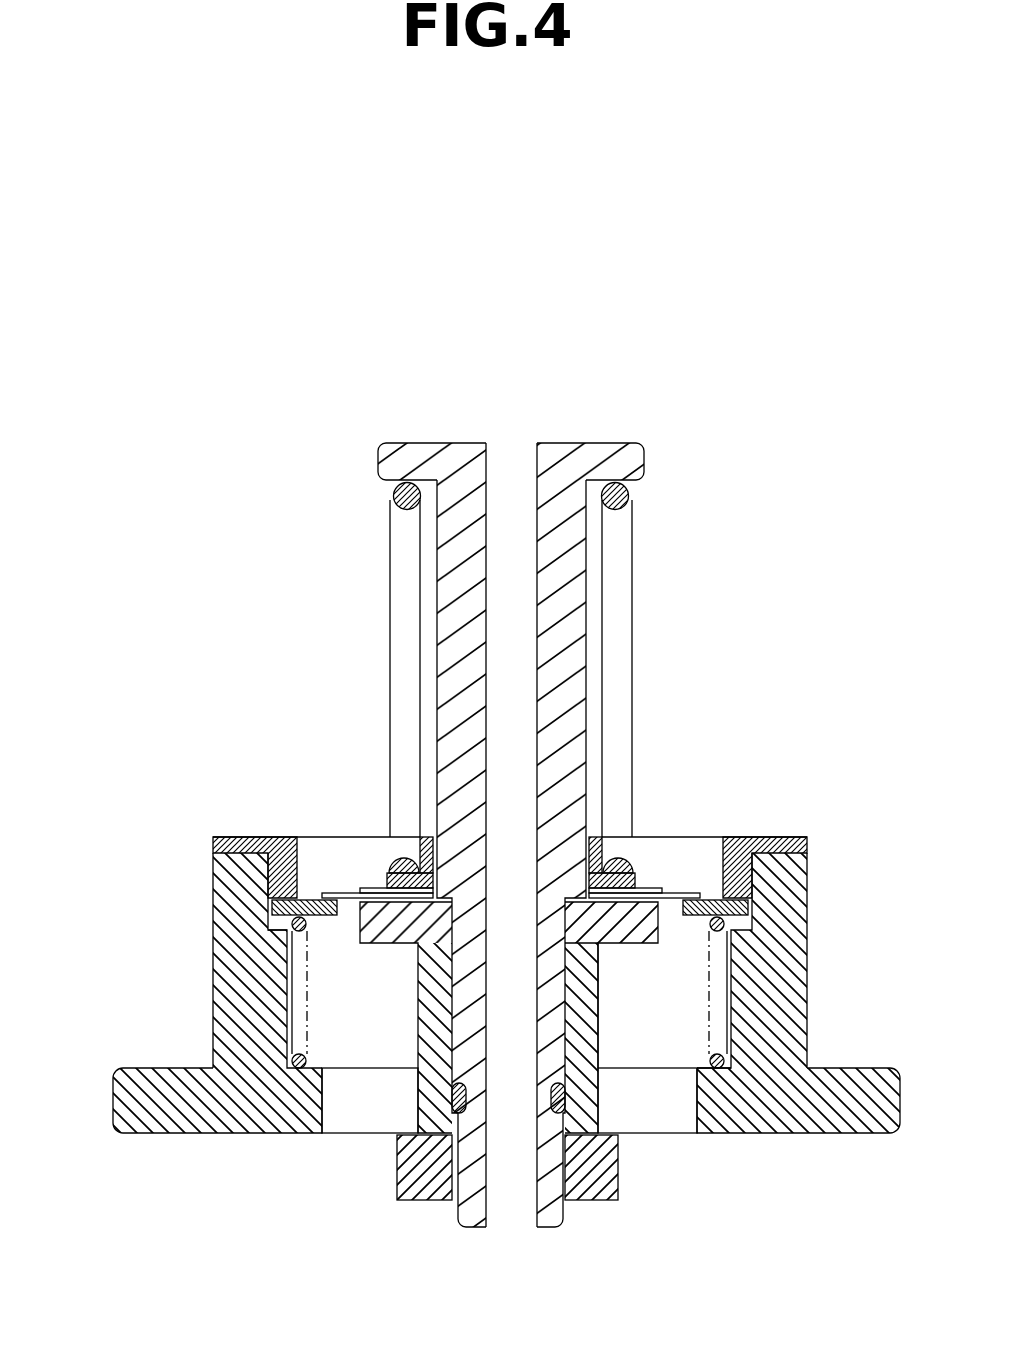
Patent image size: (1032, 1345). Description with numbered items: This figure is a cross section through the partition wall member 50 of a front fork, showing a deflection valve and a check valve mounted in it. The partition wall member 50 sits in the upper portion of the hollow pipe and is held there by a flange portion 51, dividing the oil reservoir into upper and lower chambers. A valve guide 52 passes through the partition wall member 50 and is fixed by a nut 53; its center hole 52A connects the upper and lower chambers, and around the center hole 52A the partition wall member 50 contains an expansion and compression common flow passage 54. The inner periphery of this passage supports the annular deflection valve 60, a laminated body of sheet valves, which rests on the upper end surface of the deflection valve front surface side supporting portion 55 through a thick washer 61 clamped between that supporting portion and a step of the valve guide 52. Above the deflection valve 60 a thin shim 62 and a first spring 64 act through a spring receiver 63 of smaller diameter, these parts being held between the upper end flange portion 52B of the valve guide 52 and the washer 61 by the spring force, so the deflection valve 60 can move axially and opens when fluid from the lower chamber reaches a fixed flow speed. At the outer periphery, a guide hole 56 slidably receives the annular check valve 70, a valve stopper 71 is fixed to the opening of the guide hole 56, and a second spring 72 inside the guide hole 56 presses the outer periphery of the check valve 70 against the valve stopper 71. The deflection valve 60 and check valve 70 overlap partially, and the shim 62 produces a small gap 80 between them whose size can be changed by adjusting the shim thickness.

The partition wall member 50 is at (466, 985).
The flange portion 51 is at (113, 1102).
The valve guide 52 is at (458, 790).
The center hole 52A is at (490, 478).
The upper end flange portion 52B is at (402, 463).
The nut 53 is at (423, 1180).
The expansion and compression common flow passage 54 is at (347, 1105).
The deflection valve front surface side supporting portion 55 is at (600, 993).
The guide hole 56 is at (287, 932).
The deflection valve 60 is at (625, 926).
The washer 61 is at (620, 927).
The shim 62 is at (748, 913).
The spring receiver 63 is at (640, 872).
The first spring 64 is at (630, 652).
The check valve 70 is at (305, 898).
The valve stopper 71 is at (264, 840).
The second spring 72 is at (310, 1025).
The small gap 80 is at (352, 902).